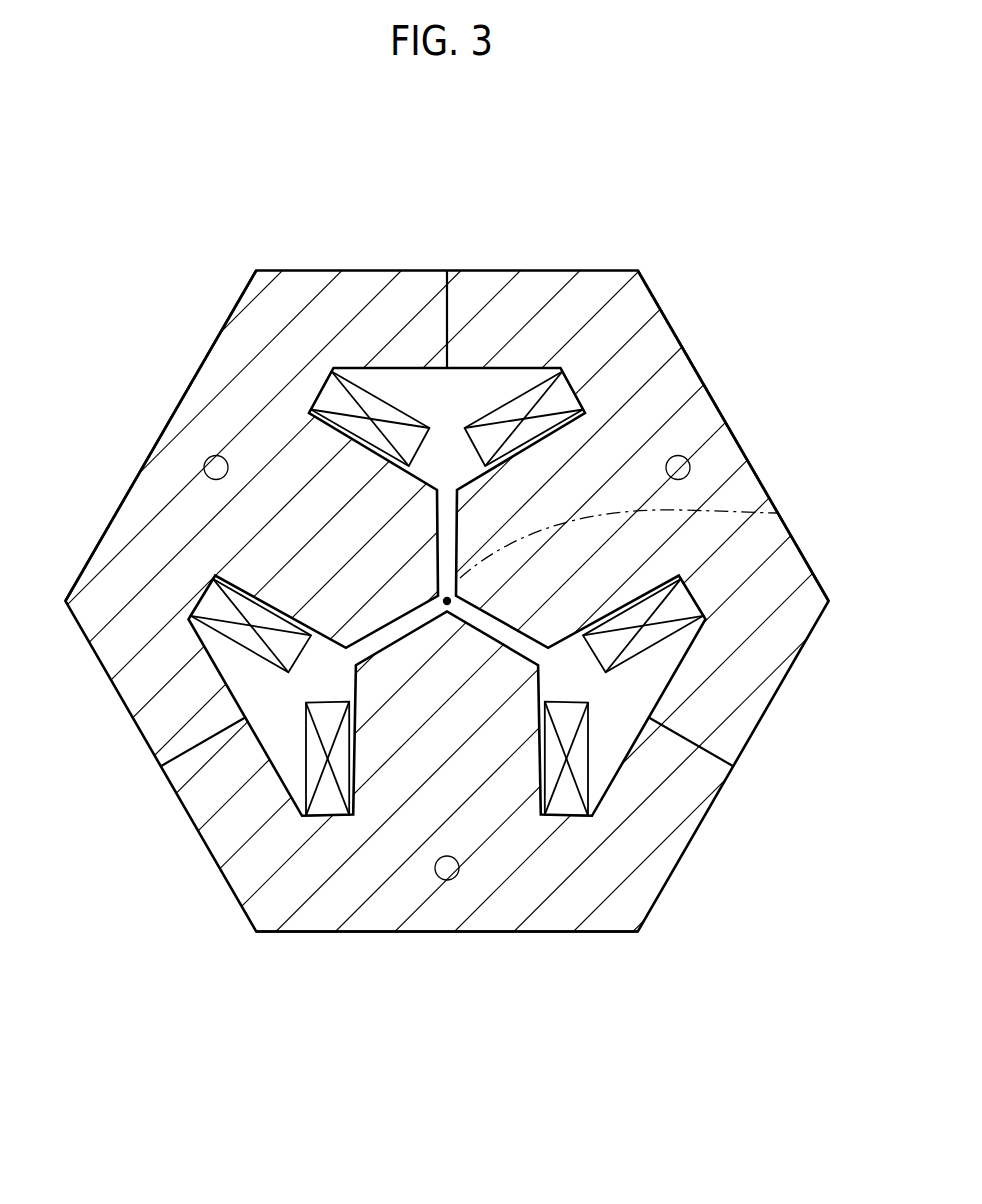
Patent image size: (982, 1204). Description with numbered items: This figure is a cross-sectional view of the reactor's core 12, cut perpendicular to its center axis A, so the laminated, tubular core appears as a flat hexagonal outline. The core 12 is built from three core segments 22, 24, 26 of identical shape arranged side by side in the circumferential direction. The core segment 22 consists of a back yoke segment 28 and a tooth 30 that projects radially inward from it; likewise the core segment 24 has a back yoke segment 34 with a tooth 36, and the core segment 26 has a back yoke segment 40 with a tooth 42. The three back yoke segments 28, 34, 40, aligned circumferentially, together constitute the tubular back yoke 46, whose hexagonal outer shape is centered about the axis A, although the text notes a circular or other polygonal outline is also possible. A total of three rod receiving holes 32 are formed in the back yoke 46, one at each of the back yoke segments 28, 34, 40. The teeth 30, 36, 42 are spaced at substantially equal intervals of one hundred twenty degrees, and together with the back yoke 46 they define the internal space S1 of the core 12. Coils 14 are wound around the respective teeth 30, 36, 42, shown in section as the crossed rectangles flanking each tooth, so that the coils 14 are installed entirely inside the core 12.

The core 12 is at (228, 213).
The coils 14 is at (330, 397).
The core segment 22 is at (178, 370).
The core segment 24 is at (387, 944).
The core segment 26 is at (762, 453).
The back yoke segment 28 is at (363, 290).
The tooth 30 is at (388, 578).
The rod receiving holes 32 is at (670, 474).
The back yoke segment 34 is at (660, 865).
The tooth 36 is at (461, 680).
The back yoke segment 40 is at (770, 660).
The tooth 42 is at (564, 578).
The back yoke 46 is at (231, 798).
The center axis A is at (773, 512).
The internal space S1 is at (637, 715).